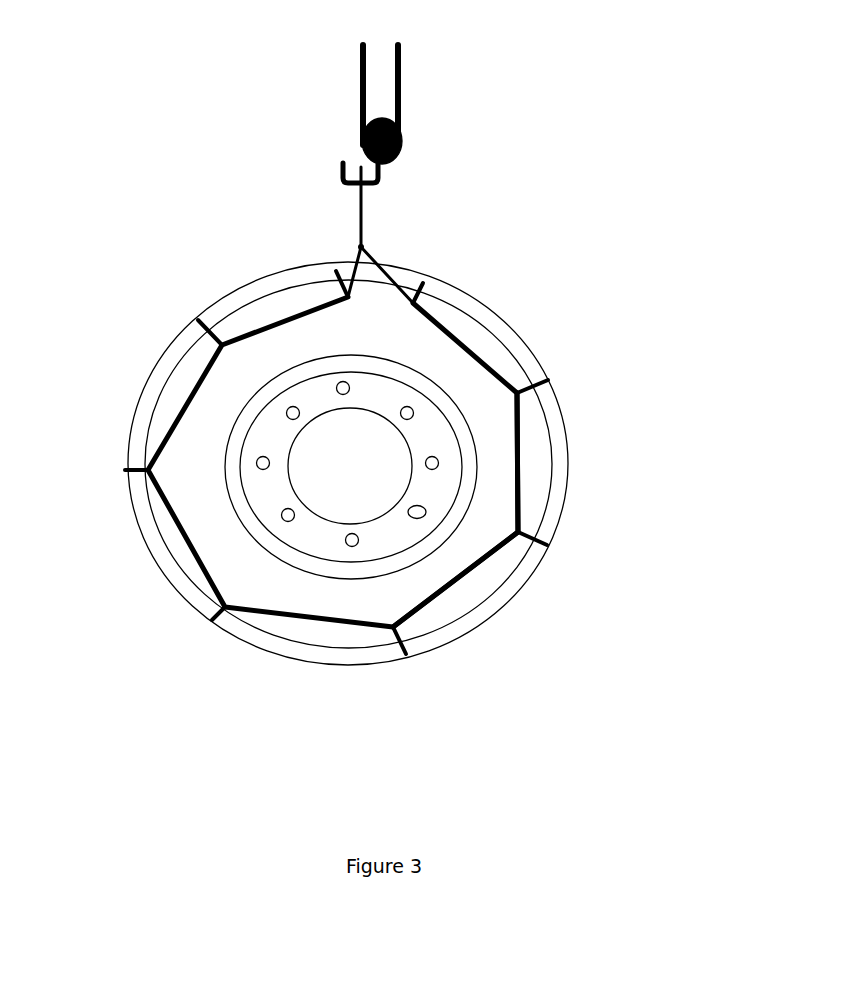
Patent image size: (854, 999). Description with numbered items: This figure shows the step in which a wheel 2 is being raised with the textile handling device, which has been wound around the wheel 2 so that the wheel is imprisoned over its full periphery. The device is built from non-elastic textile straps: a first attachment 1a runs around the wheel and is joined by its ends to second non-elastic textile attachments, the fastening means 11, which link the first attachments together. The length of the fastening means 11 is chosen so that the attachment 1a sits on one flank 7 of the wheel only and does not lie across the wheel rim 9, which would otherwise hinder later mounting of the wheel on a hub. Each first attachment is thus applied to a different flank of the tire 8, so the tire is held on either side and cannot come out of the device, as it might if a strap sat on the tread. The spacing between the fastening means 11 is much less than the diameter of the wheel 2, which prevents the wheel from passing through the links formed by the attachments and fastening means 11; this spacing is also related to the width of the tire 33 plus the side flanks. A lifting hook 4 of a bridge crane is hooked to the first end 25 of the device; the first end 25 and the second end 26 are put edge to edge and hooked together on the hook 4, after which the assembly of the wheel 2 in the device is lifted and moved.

The first non-elastic textile attachment 1a is at (488, 372).
The wheel 2 is at (225, 398).
The lifting hook 4 is at (402, 133).
The flank 7 is at (475, 480).
The tire 8 is at (482, 537).
The wheel rim 9 is at (387, 535).
The fastening means 11 is at (210, 312).
The first end 25 is at (360, 211).
The second end 26 is at (367, 247).
The tire 33 is at (327, 657).